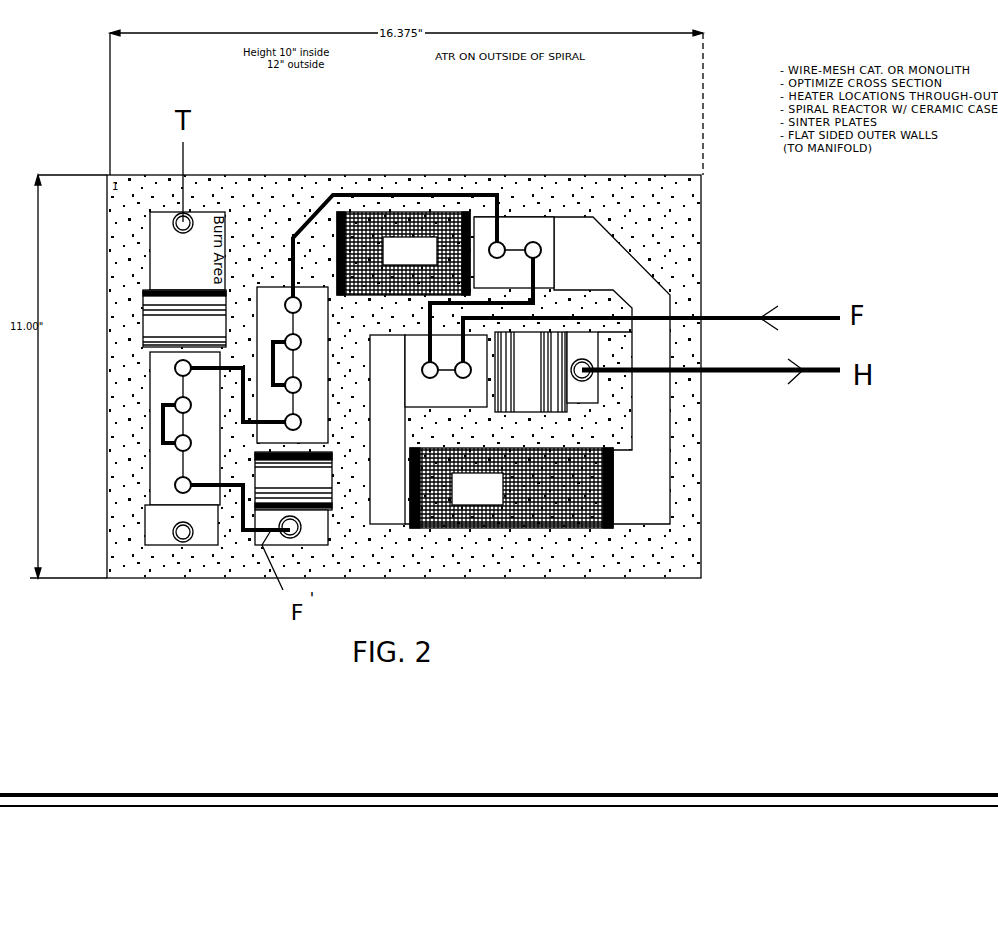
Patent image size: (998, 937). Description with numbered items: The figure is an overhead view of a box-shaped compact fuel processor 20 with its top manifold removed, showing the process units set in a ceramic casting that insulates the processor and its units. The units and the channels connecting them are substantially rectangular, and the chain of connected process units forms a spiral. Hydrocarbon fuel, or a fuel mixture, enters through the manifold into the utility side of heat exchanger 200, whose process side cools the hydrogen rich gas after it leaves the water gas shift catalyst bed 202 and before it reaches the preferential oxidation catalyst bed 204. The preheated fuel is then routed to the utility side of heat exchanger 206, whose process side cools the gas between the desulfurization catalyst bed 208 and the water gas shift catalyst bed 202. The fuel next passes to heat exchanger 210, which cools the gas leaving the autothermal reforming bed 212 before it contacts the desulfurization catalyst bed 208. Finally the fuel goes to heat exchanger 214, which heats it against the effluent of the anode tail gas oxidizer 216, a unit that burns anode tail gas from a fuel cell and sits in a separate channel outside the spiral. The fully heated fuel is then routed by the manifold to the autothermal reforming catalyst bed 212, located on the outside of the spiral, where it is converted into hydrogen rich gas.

The box-shaped fuel processor 20 is at (703, 543).
The heat exchanger 200 is at (420, 395).
The water gas shift catalyst bed 202 is at (470, 532).
The preferential oxidation catalyst bed 204 is at (530, 413).
The heat exchanger 206 is at (537, 230).
The desulfurization catalyst bed 208 is at (422, 208).
The heat exchanger 210 is at (267, 310).
The autothermal reforming catalyst bed 212 is at (267, 493).
The heat exchanger 214 is at (158, 485).
The anode tail gas oxidizer 216 is at (153, 307).